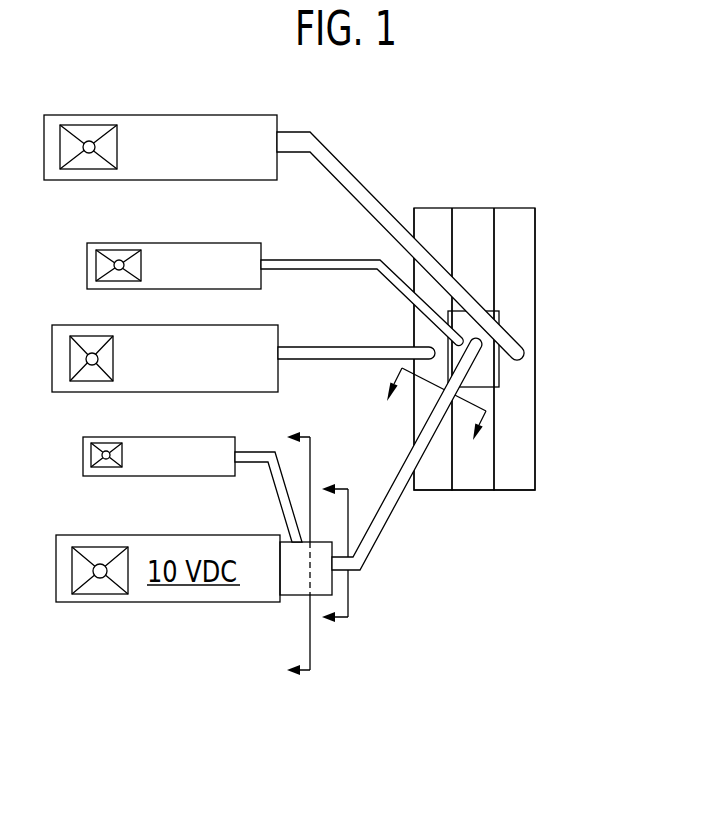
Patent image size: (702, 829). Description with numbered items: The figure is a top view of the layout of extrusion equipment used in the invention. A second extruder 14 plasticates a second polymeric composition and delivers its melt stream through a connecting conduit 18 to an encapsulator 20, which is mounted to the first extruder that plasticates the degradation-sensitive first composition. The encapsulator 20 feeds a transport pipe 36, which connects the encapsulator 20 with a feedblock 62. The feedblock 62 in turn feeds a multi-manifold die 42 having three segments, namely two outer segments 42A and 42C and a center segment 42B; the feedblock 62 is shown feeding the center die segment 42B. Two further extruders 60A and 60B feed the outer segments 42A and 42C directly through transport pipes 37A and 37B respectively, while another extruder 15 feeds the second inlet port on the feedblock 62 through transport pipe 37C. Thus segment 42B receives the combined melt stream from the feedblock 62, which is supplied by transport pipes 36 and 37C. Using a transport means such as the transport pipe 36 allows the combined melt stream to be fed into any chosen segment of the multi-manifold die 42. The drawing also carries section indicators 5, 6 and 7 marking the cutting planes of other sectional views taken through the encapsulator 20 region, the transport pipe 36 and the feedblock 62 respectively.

The section line 5- 5 is at (298, 554).
The section line 6- 6 is at (335, 557).
The section line 7- 7 is at (431, 418).
The second extruder 14 is at (182, 468).
The extruder 15 is at (213, 278).
The connecting conduit 18 is at (270, 483).
The encapsulator 20 is at (284, 597).
The transport pipe 36 is at (382, 530).
The transport pipe 37A is at (361, 186).
The transport pipe 37B is at (347, 346).
The transport pipe 37C is at (333, 258).
The multi-manifold die 42 is at (510, 197).
The die segment 42A is at (433, 491).
The center die segment 42B is at (474, 491).
The die segment 42C is at (528, 491).
The extruder 60A is at (200, 159).
The extruder 60B is at (204, 368).
The feedblock 62 is at (500, 374).